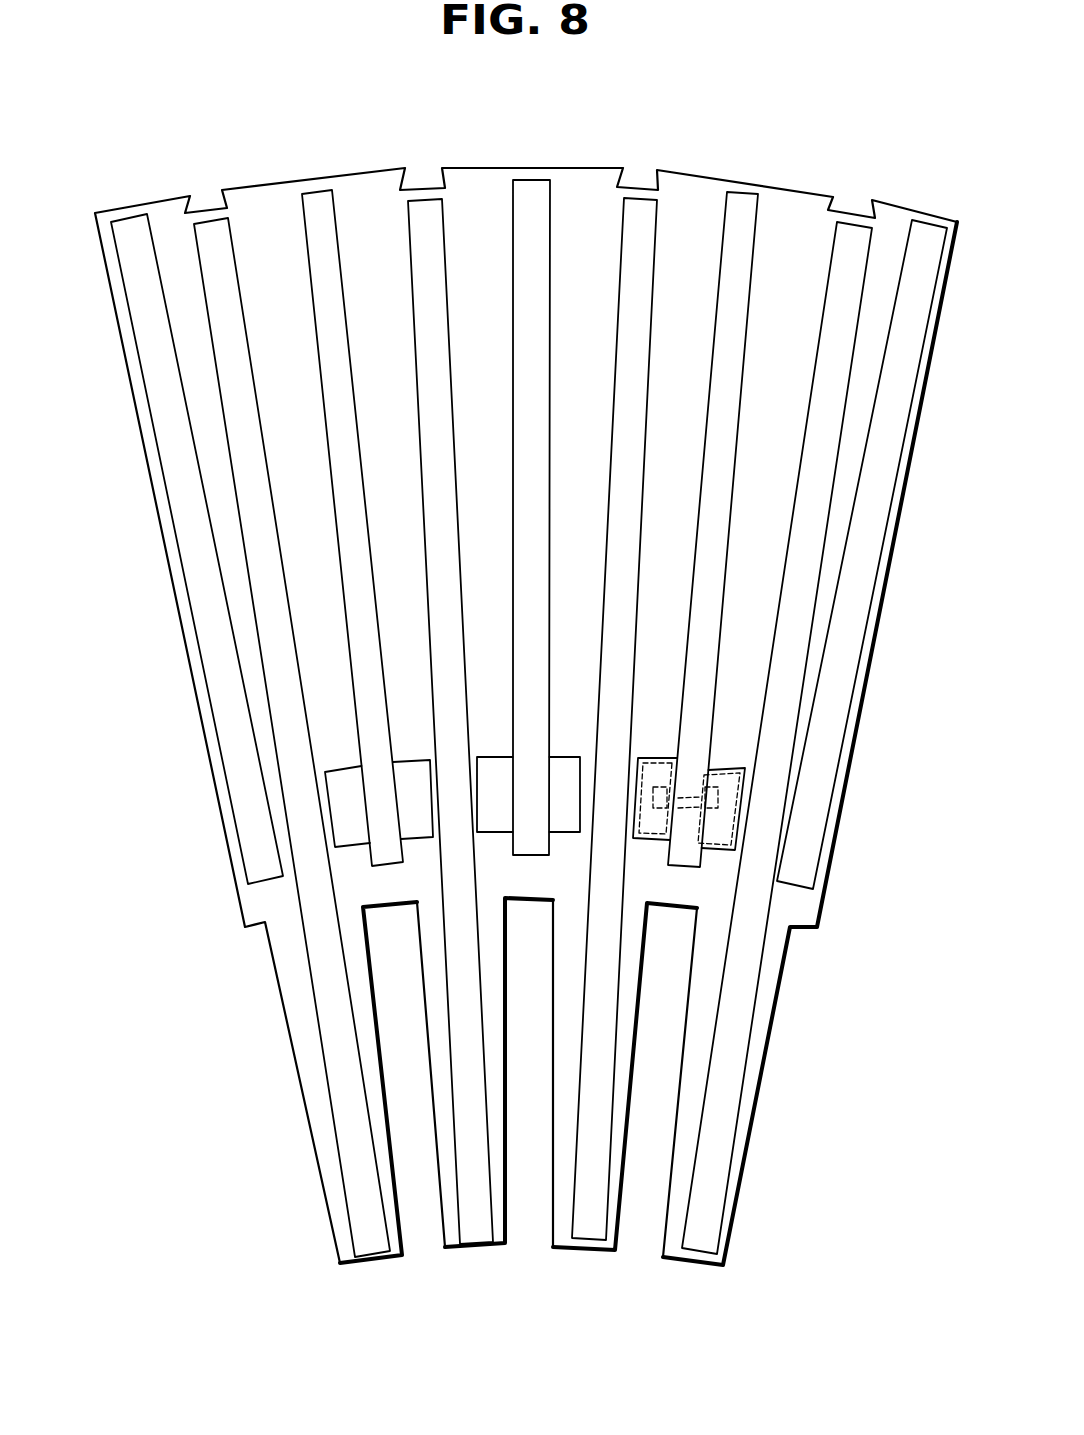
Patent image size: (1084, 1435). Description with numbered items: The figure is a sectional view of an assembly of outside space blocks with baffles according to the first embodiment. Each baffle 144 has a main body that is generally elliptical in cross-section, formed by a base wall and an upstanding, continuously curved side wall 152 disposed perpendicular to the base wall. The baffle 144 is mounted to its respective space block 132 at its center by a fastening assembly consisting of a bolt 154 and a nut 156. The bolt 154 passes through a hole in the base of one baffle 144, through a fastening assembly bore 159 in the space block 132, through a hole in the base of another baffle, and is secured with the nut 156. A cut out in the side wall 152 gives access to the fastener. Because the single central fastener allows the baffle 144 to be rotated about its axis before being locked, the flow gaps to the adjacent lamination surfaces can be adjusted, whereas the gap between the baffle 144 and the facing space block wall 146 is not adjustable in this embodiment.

The space block 132 is at (527, 195).
The space block wall 146 is at (430, 228).
The baffle 144 is at (409, 746).
The upstanding side wall 152 is at (650, 757).
The bolt 154 is at (663, 817).
The nut 156 is at (715, 817).
The fastening assembly bore 159 is at (689, 792).